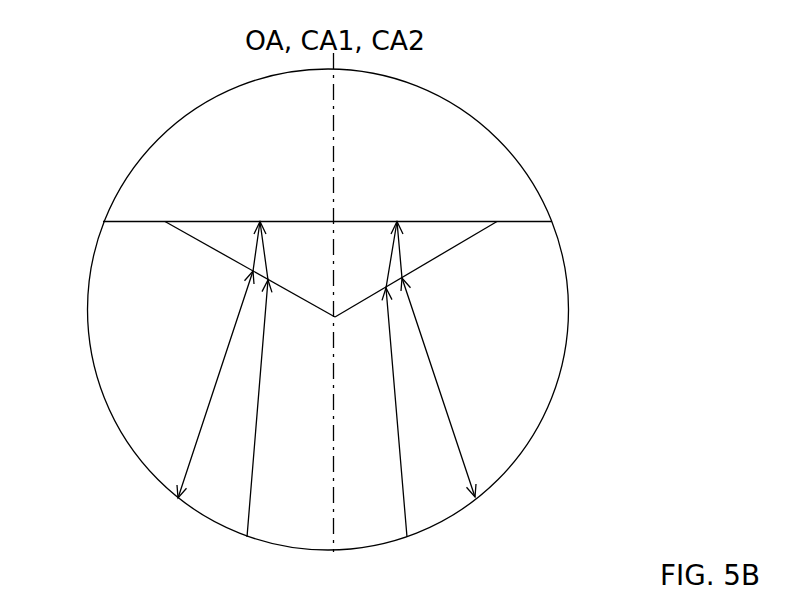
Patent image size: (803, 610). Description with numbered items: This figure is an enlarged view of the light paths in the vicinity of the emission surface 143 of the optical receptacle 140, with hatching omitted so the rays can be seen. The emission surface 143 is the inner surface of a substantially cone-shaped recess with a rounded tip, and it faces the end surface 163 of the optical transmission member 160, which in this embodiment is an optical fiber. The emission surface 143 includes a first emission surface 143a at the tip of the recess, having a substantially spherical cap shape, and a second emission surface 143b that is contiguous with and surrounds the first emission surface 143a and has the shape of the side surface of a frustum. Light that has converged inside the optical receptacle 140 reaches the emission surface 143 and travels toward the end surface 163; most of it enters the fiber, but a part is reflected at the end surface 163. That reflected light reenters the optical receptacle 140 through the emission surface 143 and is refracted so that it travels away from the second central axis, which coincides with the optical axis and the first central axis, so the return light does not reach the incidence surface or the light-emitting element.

The optical receptacle 140 is at (525, 355).
The emission surface 143 is at (423, 184).
The first emission surface 143a is at (335, 317).
The second emission surface 143b is at (437, 257).
The optical transmission member 160 is at (147, 185).
The end surface 163 is at (297, 222).